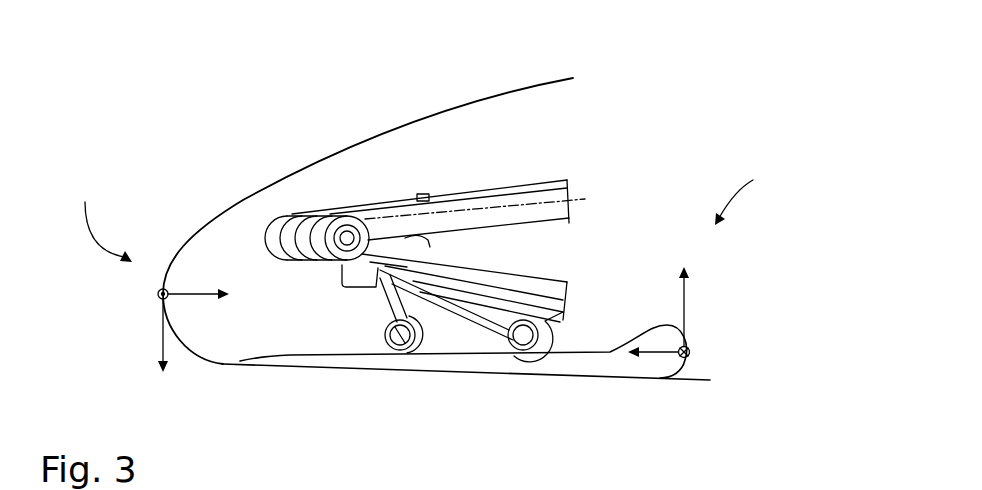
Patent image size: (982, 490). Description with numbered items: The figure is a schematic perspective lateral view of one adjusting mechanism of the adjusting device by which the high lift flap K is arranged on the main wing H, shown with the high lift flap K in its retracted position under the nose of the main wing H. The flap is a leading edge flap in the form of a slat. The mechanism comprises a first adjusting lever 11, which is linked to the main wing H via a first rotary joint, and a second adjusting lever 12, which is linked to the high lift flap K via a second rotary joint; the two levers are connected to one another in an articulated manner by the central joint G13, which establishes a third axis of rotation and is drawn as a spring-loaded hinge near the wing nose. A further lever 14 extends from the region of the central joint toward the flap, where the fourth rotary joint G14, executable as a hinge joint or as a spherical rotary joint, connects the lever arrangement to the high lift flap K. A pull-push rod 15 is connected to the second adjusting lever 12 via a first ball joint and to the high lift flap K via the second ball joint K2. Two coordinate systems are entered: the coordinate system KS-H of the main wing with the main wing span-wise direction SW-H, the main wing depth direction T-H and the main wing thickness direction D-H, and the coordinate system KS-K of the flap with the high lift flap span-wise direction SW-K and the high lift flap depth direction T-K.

The main wing H is at (433, 125).
The high lift flap K is at (622, 365).
The central joint G13 is at (275, 232).
The first adjusting lever 11 is at (390, 200).
The second adjusting lever 12 is at (470, 275).
The connecting link 14 is at (558, 330).
The pull-push rod 15 is at (393, 302).
The second ball joint K2 is at (400, 338).
The fourth rotary joint G14 is at (523, 340).
The main wing span-wise direction SW-H is at (158, 293).
The main wing depth direction T-H is at (198, 285).
The main wing thickness direction D-H is at (127, 335).
The coordinate system for the main wing KS-H is at (99, 216).
The high lift flap span-wise direction SW-K is at (690, 351).
The high lift flap depth direction T-K is at (685, 295).
The coordinate system for the high lift flap KS-K is at (755, 192).